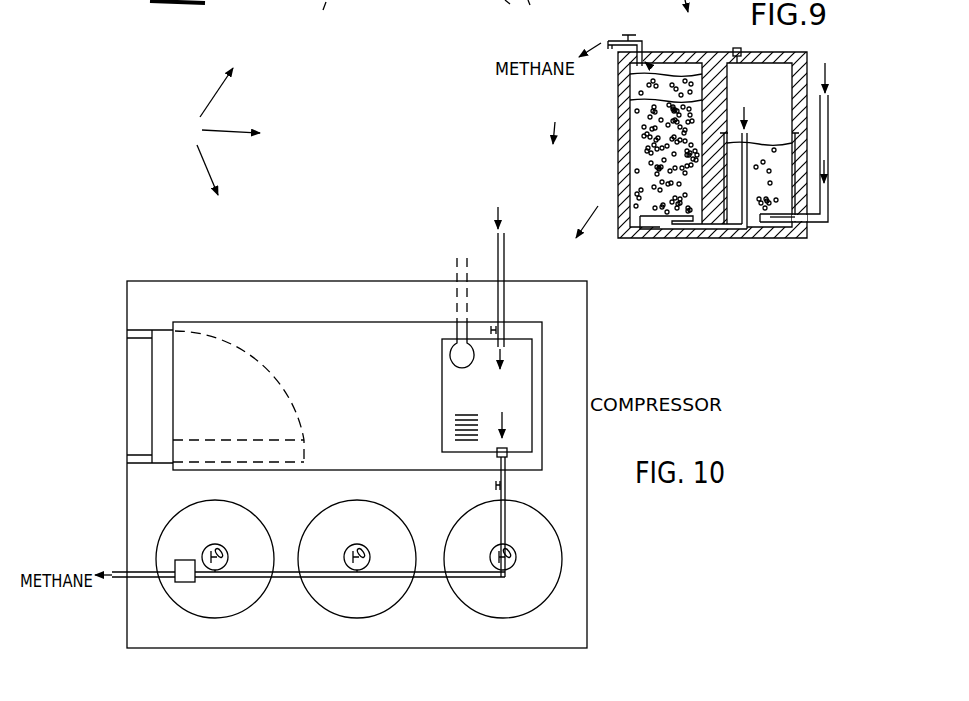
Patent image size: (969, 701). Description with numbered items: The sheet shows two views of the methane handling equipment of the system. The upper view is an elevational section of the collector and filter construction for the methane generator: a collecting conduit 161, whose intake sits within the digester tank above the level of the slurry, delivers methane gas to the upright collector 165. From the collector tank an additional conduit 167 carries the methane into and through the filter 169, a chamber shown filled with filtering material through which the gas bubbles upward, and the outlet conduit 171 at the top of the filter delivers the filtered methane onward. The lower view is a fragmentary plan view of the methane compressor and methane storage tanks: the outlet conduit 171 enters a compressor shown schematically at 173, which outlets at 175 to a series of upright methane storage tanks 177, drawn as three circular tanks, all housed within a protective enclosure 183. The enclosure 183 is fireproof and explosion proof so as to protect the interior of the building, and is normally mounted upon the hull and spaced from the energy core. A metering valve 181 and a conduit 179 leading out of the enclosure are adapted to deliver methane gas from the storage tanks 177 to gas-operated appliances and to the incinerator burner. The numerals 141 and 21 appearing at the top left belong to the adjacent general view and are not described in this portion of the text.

In FIG. 10, the vehicle body 21 is at (334, 18).
In FIG. 10, the methane fuel system 141 is at (210, 131).
In FIG. 9, the collecting conduit 161 is at (829, 141).
In FIG. 9, the upright collector 165 is at (783, 238).
In FIG. 9, the additional conduit 167 is at (707, 238).
In FIG. 9, the filter 169 is at (690, 92).
In FIG. 9, the outlet conduit 171 is at (609, 46).
In FIG. 10, the outlet conduit 171 is at (546, 219).
In FIG. 10, the compressor 173 is at (520, 387).
In FIG. 10, the compressor outlet 175 is at (507, 490).
In FIG. 10, the methane storage tanks 177 is at (257, 602).
In FIG. 10, the conduit 179 is at (116, 582).
In FIG. 10, the metering valve 181 is at (185, 582).
In FIG. 10, the protective enclosure 183 is at (262, 638).